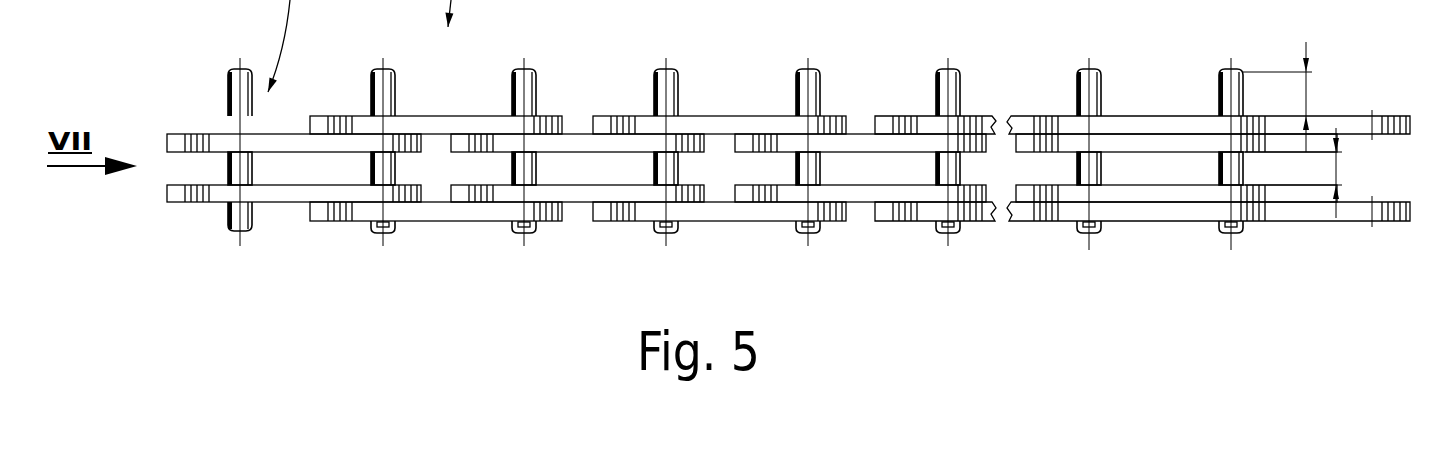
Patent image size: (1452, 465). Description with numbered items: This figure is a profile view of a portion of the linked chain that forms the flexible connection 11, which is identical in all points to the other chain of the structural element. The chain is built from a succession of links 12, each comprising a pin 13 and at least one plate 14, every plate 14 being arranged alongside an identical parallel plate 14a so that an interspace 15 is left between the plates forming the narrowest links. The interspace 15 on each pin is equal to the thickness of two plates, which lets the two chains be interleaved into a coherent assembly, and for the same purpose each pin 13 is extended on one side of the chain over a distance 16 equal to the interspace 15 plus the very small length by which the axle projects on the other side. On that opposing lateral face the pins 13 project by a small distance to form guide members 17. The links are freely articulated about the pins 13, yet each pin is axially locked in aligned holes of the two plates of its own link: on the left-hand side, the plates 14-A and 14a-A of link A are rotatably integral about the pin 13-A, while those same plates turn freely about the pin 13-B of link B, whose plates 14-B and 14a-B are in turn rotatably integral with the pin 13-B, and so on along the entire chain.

The flexible connection 11 is at (1417, 142).
The link 12 is at (575, 125).
The pin 13 is at (934, 83).
The pin of link A 13-A is at (242, 233).
The pin of link B 13-B is at (387, 233).
The plate 14 is at (860, 192).
The parallel plate 14a is at (855, 142).
The plate of link A 14-A is at (217, 200).
The parallel plate of link A 14a-A is at (220, 137).
The plate of link B 14-B is at (445, 207).
The parallel plate of link B 14a-B is at (408, 128).
The interspace 15 is at (1337, 170).
The pin extension distance 16 is at (1307, 102).
The guide member 17 is at (1212, 233).